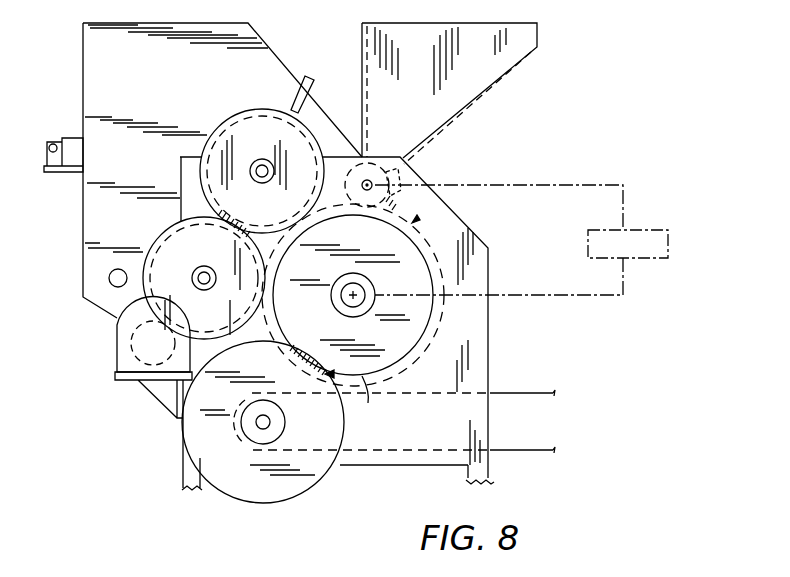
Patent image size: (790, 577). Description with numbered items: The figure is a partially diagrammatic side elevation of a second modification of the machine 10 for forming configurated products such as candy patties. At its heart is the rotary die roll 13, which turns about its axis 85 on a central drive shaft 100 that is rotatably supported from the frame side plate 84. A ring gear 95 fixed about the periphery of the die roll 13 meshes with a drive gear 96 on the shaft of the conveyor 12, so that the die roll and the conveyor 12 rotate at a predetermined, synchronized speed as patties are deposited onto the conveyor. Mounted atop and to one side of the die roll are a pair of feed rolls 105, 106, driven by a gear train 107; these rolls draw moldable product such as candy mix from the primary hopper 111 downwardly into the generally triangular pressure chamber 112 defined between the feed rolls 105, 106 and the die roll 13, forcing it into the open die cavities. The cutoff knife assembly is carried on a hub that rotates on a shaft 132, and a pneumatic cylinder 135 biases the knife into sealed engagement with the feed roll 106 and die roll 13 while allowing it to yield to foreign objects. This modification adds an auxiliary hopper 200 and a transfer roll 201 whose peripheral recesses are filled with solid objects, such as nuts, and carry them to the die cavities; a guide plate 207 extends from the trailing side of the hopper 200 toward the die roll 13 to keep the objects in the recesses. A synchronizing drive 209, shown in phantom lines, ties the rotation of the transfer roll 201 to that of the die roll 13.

The machine 10 is at (554, 62).
The conveyor 12 is at (537, 388).
The die roll 13 is at (440, 212).
The side plate 84 is at (476, 367).
The axis of the die roll 85 is at (358, 290).
The ring gear 95 is at (376, 398).
The drive gear 96 is at (343, 430).
The central drive shaft 100 is at (343, 303).
The feed roll 105 is at (268, 112).
The feed roll 106 is at (152, 320).
The gear train 107 is at (202, 208).
The hopper 111 is at (192, 91).
The pressure chamber 112 is at (266, 234).
The shaft 132 is at (109, 279).
The pneumatic cylinder 135 is at (75, 147).
The auxiliary hopper 200 is at (467, 86).
The transfer roll 201 is at (380, 154).
The guide plate 207 is at (427, 174).
The synchronizing drive 209 is at (632, 186).